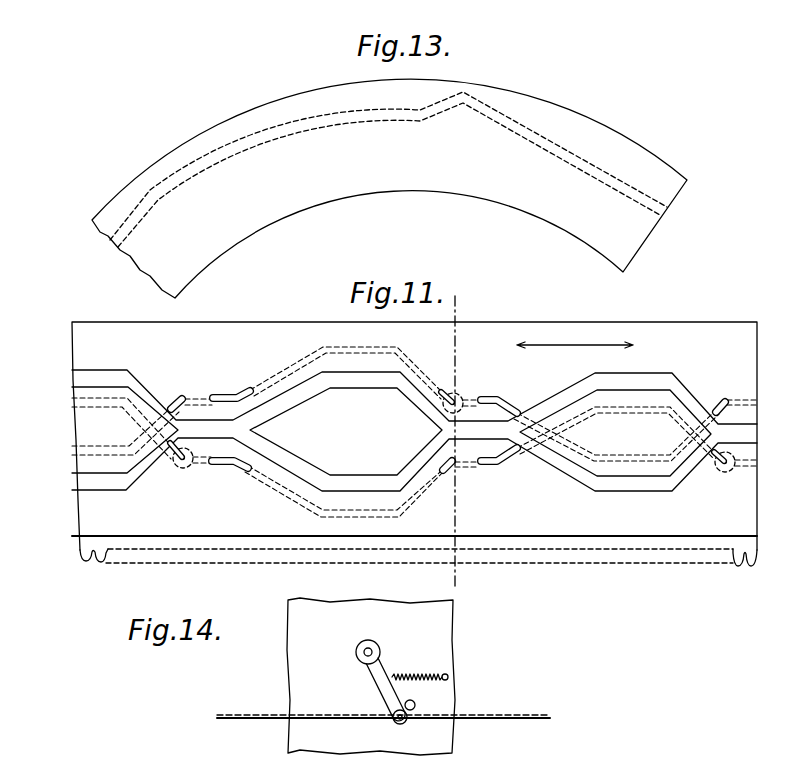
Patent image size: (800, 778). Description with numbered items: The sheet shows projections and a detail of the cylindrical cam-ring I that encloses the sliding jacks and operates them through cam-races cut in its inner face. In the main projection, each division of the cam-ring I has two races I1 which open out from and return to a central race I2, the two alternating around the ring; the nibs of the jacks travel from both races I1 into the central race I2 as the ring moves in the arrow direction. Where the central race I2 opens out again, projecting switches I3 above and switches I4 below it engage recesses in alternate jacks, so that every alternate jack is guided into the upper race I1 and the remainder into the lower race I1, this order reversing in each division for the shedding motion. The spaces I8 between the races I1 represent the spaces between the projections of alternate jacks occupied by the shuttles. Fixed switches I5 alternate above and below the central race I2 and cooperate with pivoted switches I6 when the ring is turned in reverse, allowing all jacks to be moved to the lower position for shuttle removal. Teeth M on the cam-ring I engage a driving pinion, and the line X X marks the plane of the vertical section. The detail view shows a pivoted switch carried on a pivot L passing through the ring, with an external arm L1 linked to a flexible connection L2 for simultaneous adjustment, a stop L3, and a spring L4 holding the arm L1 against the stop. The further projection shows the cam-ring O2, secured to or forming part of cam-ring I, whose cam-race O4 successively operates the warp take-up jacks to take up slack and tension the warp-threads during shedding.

In FIG. 11, the cam-ring I is at (767, 435).
In FIG. 14, the cam-ring I is at (371, 676).
In FIG. 11, the races I1 is at (94, 378).
In FIG. 11, the central race I2 is at (444, 432).
In FIG. 11, the switches I3 is at (219, 392).
In FIG. 11, the switches I4 is at (250, 467).
In FIG. 11, the fixed switches I5 is at (182, 397).
In FIG. 11, the pivoted switches I6 is at (460, 434).
In FIG. 11, the spaces I8 is at (480, 432).
In FIG. 11, the teeth M is at (93, 560).
In FIG. 11, the section line X is at (466, 441).
In FIG. 13, the cam-ring O2 is at (389, 188).
In FIG. 13, the cam-race O4 is at (508, 108).
In FIG. 14, the pivots L is at (380, 648).
In FIG. 14, the arms L1 is at (373, 680).
In FIG. 14, the flexible connection L2 is at (257, 715).
In FIG. 14, the stops L3 is at (415, 705).
In FIG. 14, the springs L4 is at (420, 676).